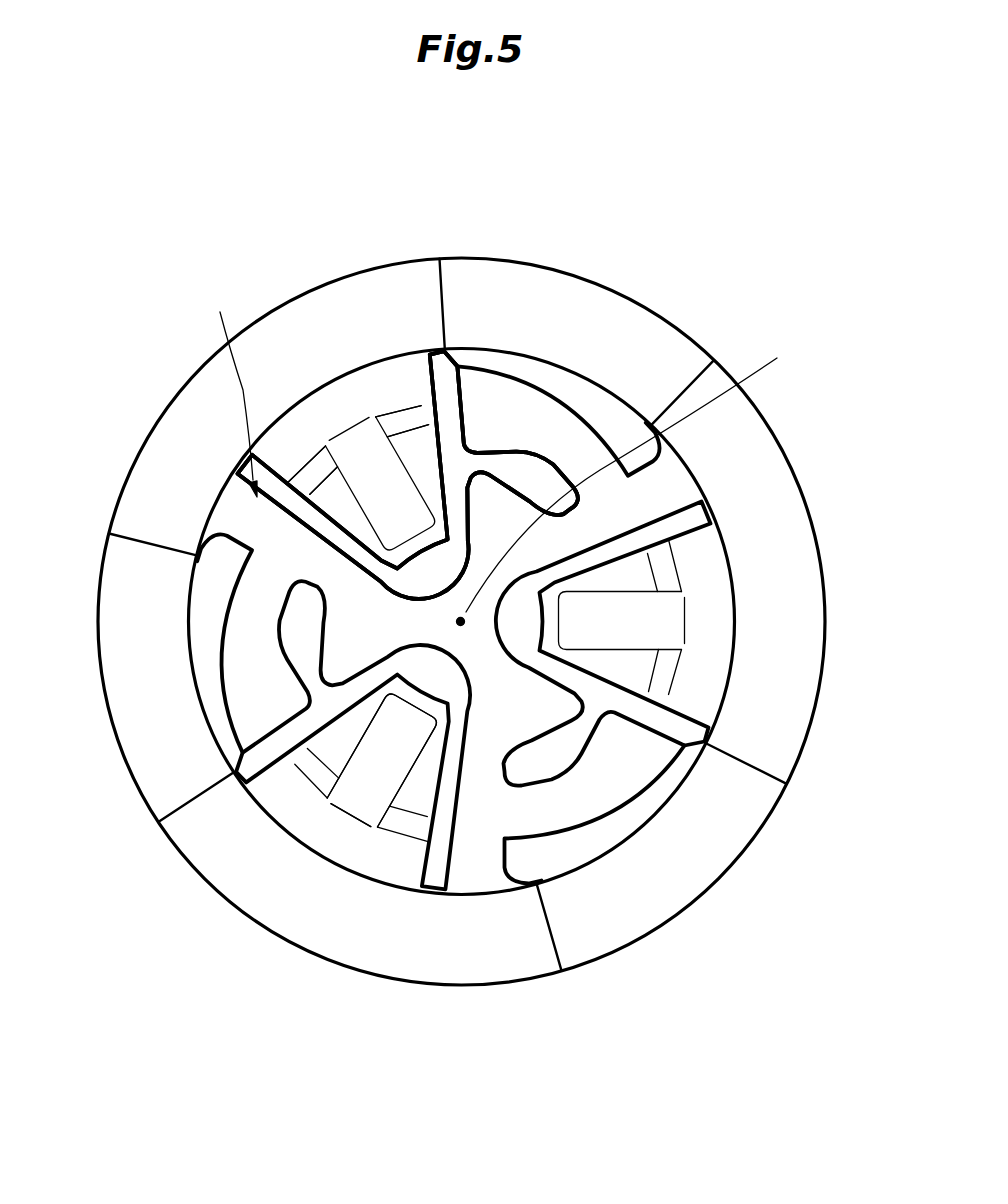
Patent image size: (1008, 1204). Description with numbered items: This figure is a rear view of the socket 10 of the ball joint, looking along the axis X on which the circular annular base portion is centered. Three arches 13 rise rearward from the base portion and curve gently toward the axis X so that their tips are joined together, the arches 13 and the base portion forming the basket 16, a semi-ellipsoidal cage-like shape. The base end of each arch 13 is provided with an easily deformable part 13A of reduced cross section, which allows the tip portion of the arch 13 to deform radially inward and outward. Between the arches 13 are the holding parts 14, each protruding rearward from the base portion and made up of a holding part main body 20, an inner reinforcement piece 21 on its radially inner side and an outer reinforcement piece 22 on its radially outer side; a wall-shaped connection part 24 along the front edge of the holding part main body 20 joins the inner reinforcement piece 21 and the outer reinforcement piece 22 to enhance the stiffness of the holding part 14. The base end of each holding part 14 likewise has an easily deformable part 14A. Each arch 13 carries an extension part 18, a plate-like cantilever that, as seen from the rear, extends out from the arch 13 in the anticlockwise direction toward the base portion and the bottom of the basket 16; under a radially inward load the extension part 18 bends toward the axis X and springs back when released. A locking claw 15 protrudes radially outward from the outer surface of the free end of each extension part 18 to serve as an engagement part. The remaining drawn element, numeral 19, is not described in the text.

The socket 10 is at (680, 318).
The arch 13 is at (670, 487).
The easily deformable part 13A is at (280, 547).
The holding part 14 is at (360, 392).
The easily deformable part 14A is at (370, 855).
The locking claw 15 is at (492, 400).
The basket 16 is at (260, 457).
The extension part 18 is at (562, 395).
The ring segment 19 is at (557, 290).
The holding part main body 20 is at (400, 430).
The inner reinforcement piece 21 is at (403, 577).
The outer reinforcement piece 22 is at (320, 467).
The connection part 24 is at (227, 390).
The axis X is at (628, 475).